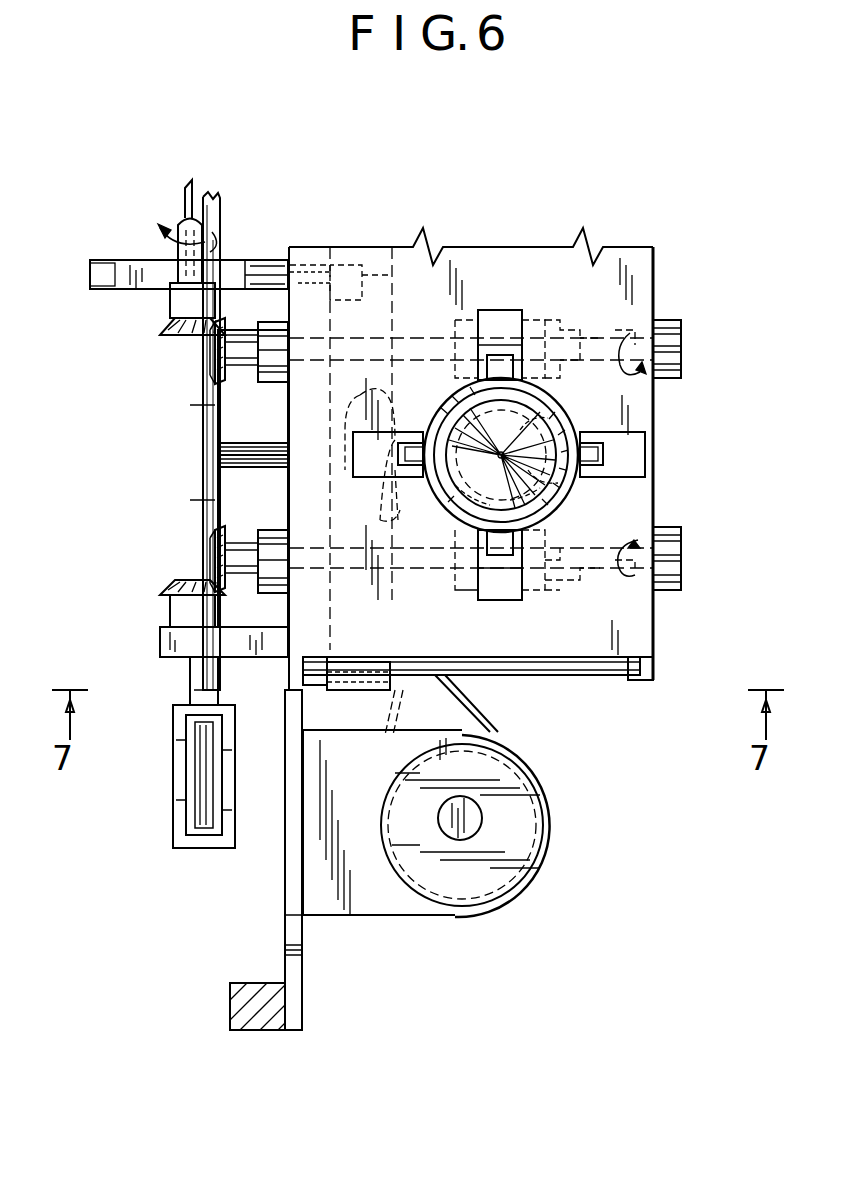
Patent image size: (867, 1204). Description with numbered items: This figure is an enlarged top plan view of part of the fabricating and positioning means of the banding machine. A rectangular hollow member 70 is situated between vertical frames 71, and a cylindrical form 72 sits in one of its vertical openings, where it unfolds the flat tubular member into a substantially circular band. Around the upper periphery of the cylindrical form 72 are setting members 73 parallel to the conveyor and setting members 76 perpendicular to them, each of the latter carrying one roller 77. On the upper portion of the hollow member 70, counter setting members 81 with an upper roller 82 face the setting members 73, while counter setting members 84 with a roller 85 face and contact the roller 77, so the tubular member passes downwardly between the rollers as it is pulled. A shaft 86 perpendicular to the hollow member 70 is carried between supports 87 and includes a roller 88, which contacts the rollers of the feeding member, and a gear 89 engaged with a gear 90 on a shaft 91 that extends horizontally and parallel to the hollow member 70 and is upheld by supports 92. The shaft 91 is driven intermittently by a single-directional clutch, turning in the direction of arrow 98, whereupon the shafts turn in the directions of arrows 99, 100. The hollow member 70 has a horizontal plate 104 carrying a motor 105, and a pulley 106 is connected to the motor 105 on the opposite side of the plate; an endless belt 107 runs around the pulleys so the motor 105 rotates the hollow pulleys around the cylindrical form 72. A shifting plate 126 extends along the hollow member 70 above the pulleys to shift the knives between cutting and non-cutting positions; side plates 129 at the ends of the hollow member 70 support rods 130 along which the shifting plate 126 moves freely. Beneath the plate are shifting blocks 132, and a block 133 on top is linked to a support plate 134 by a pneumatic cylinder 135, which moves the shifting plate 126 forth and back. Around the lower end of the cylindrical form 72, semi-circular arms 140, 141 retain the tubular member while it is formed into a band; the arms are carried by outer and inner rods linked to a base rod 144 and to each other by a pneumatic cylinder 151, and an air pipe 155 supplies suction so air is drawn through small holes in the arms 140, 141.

The rectangular hollow member 70 is at (648, 643).
The vertical frame 71 is at (230, 1012).
The cylindrical form 72 is at (572, 412).
The setting member 73 is at (598, 515).
The setting member 76 is at (584, 523).
The roller 77 is at (479, 471).
The counter setting member 81 is at (353, 455).
The upper roller 82 is at (410, 465).
The counter setting member 84 is at (520, 312).
The roller 85 is at (487, 368).
The shaft 86 is at (605, 330).
The support 87 is at (681, 340).
The roller 88 is at (455, 320).
The gear 89 is at (225, 350).
The gear 90 is at (160, 342).
The shaft 91 is at (180, 545).
The support 92 is at (262, 657).
The arrow 98 is at (160, 226).
The arrow 99 is at (635, 575).
The arrow 100 is at (628, 333).
The horizontal plate 104 is at (360, 915).
The motor 105 is at (445, 905).
The pulley 106 is at (515, 830).
The endless belt 107 is at (490, 718).
The shifting plate 126 is at (400, 580).
The side plate 129 is at (350, 690).
The rod 130 is at (600, 675).
The outer shifting block 132 is at (340, 408).
The block 133 is at (372, 262).
The support plate 134 is at (262, 268).
The pneumatic cylinder 135 is at (120, 289).
The semi-circular arm 140 is at (236, 467).
The semi-circular arm 141 is at (246, 443).
The base rod 144 is at (215, 705).
The pneumatic cylinder 151 is at (205, 755).
The air pipe 155 is at (188, 680).